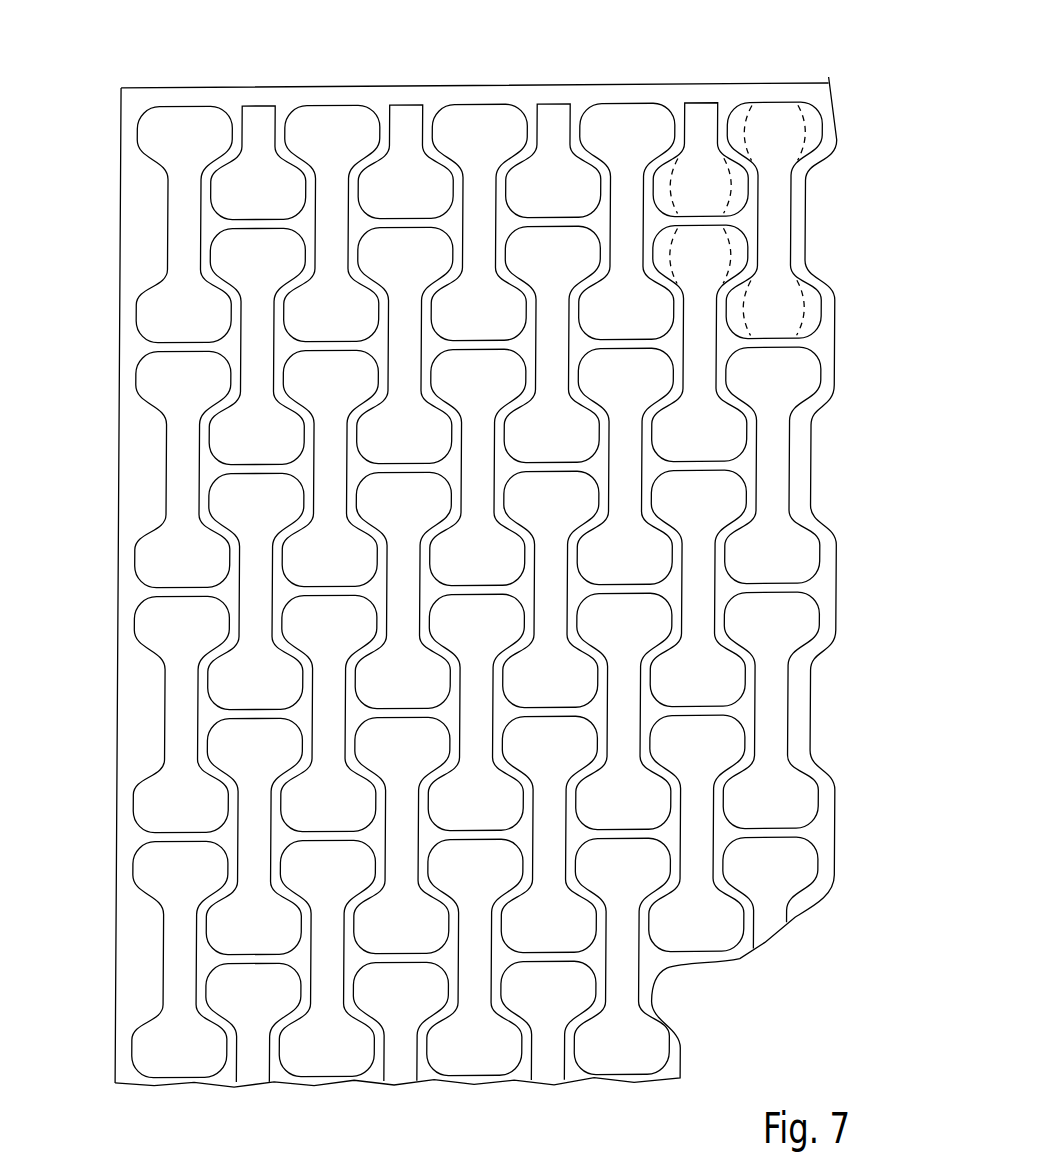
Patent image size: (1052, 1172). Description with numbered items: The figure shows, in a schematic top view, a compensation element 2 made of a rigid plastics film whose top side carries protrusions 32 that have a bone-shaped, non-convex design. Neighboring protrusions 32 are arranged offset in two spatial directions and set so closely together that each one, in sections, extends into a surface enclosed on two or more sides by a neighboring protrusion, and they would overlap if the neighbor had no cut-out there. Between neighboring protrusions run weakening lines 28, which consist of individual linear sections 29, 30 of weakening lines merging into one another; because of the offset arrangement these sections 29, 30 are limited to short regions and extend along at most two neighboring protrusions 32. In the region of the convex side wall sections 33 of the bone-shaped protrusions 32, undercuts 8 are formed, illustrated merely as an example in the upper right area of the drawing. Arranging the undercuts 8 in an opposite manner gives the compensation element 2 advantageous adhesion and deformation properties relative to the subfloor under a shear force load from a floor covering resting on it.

The compensation element 2 is at (667, 100).
The undercuts 8 is at (737, 122).
The weakening lines 28 is at (228, 106).
The section of weakening line 29 is at (255, 222).
The section of weakening line 30 is at (305, 222).
The protrusions 32 is at (183, 212).
The convex side wall sections 33 is at (730, 118).